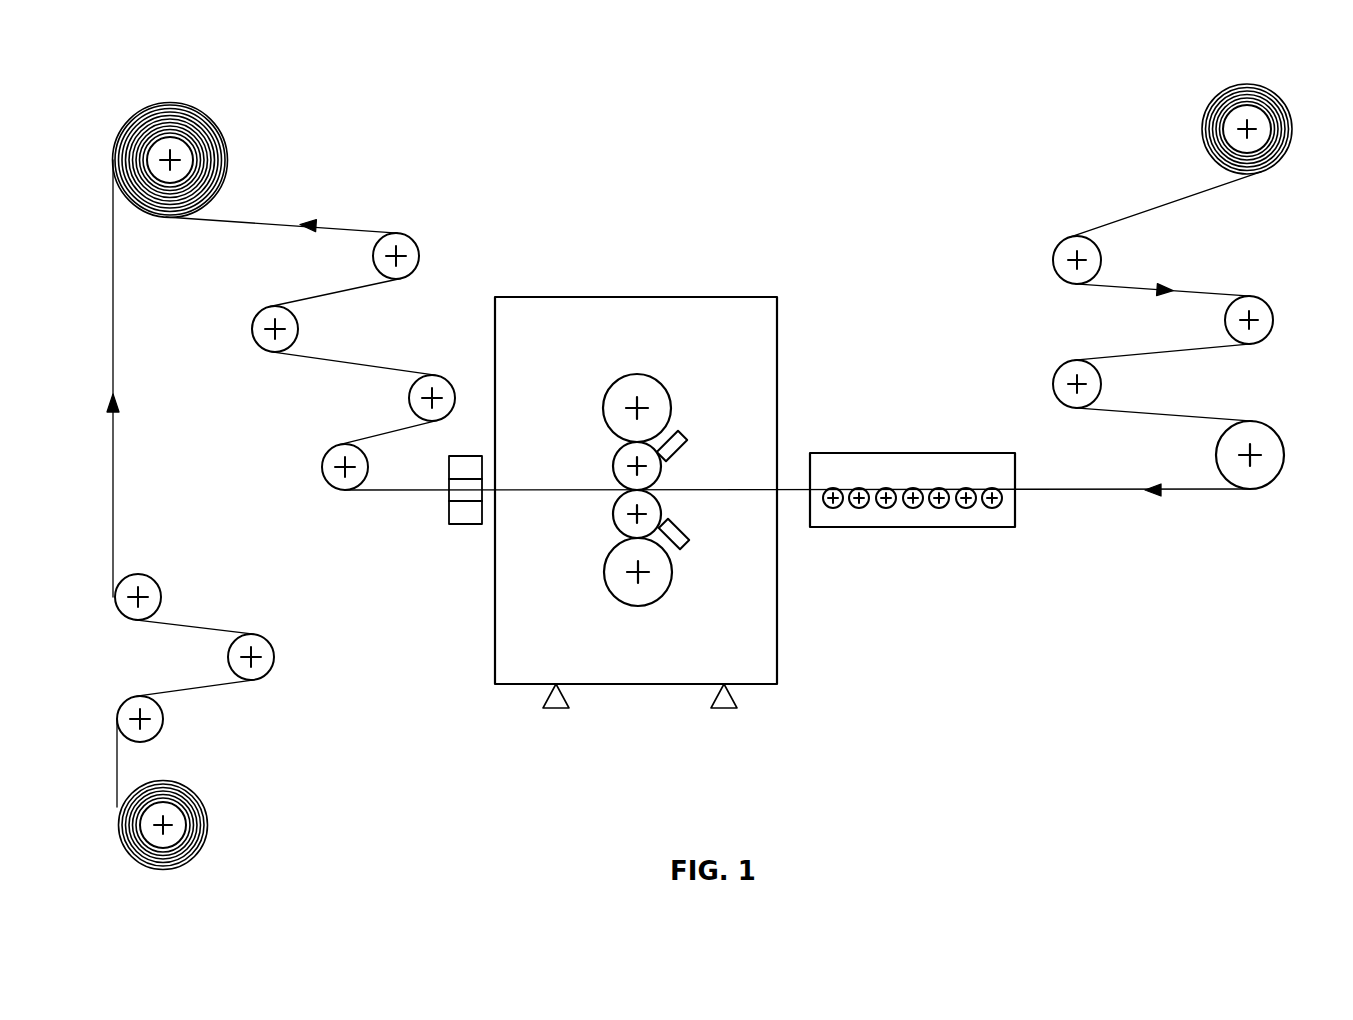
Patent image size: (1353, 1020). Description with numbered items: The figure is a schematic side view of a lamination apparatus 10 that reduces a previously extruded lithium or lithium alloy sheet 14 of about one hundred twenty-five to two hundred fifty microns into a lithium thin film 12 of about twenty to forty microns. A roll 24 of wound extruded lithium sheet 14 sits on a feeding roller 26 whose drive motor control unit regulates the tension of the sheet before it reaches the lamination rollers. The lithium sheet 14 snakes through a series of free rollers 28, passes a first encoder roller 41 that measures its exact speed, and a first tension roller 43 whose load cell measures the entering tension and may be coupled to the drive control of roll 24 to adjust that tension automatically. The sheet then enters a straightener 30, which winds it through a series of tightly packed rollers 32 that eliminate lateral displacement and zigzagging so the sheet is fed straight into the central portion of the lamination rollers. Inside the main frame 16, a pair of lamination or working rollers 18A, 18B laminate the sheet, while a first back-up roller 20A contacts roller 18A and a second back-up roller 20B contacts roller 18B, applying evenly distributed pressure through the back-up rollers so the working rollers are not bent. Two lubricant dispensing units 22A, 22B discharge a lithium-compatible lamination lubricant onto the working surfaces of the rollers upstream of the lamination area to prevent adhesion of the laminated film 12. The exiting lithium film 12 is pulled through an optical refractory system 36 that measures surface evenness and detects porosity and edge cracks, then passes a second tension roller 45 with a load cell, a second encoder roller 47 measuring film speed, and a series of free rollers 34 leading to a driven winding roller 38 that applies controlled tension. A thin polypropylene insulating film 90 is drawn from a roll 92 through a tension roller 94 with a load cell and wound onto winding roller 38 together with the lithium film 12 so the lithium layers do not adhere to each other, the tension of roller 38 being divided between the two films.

The lamination apparatus 10 is at (697, 249).
The lithium or lithium alloy thin film 12 is at (270, 223).
The extruded lithium or lithium alloy sheet 14 is at (1161, 202).
The main frame 16 is at (595, 297).
The lamination roller 18A is at (621, 521).
The lamination roller 18B is at (621, 474).
The first back-up roller 20A is at (655, 593).
The second back-up roller 20B is at (654, 390).
The lamination lubricant dispensing unit 22A is at (678, 541).
The lamination lubricant dispensing unit 22B is at (679, 443).
The roll of winded extruded lithium sheet 24 is at (1247, 91).
The feeding roller 26 is at (1260, 140).
The free rollers 28 is at (1066, 279).
The straightener 30 is at (905, 453).
The tightly packed rollers 32 is at (833, 508).
The free rollers 34 is at (410, 262).
The optical refractory system 36 is at (465, 517).
The driven winding roller 38 is at (157, 150).
The first encoder roller 41 is at (1066, 399).
The first tension roller 43 is at (1266, 466).
The second tension roller 45 is at (332, 482).
The second encoder roller 47 is at (413, 412).
The insulating film 90 is at (113, 363).
The roll of insulating film 92 is at (173, 813).
The tension roller 94 is at (260, 642).